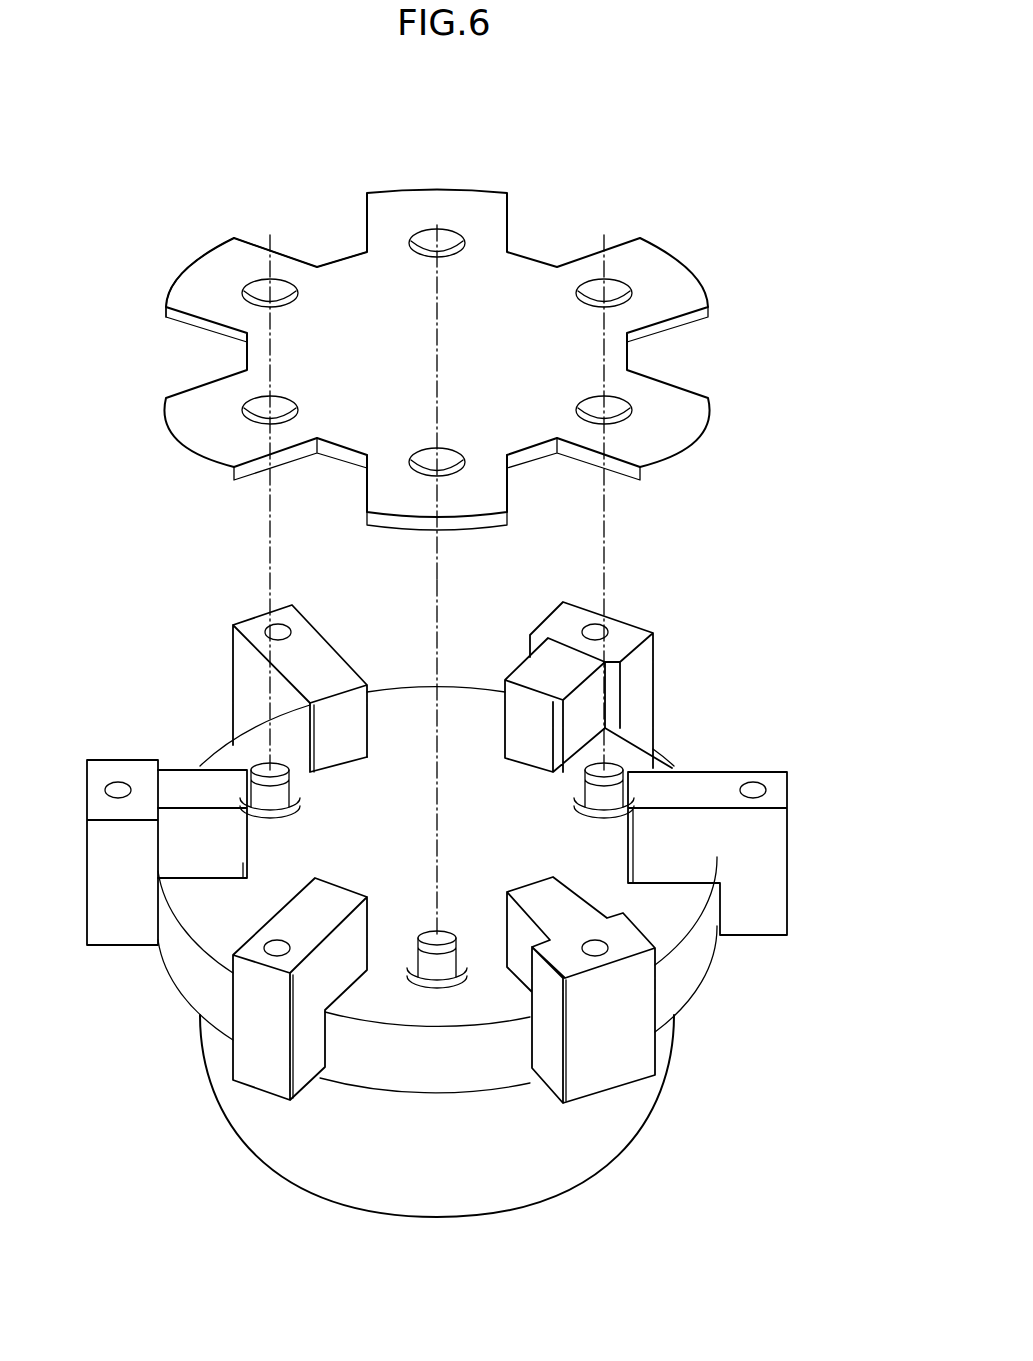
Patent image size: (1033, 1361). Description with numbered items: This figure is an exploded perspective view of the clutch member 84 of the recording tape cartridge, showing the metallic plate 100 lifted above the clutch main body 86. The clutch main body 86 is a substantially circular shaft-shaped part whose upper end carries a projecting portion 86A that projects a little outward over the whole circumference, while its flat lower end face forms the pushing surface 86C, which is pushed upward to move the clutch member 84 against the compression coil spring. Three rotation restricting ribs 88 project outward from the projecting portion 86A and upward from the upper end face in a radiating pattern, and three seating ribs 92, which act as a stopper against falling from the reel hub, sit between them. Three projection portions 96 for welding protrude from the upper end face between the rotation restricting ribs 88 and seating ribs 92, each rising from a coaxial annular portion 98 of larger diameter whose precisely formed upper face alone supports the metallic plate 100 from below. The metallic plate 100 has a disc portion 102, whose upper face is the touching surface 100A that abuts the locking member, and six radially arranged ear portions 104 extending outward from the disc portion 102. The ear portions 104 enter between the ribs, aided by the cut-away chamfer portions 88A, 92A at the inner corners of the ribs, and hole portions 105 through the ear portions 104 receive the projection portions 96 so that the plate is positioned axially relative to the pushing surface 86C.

The clutch member 84 is at (727, 238).
The clutch main body 86 is at (435, 1188).
The projecting portion 86A is at (178, 968).
The pushing surface 86C is at (488, 1215).
The rotation restricting ribs 88 is at (243, 680).
The chamfer portions 88A is at (317, 765).
The seating ribs 92 is at (632, 636).
The chamfer portions 92A is at (553, 748).
The projection portions 96 is at (260, 771).
The annular portions 98 is at (282, 812).
The metallic plate 100 is at (445, 173).
The touching surface 100A is at (438, 352).
The disc portion 102 is at (342, 254).
The ear portions 104 is at (207, 432).
The hole portions 105 is at (262, 290).